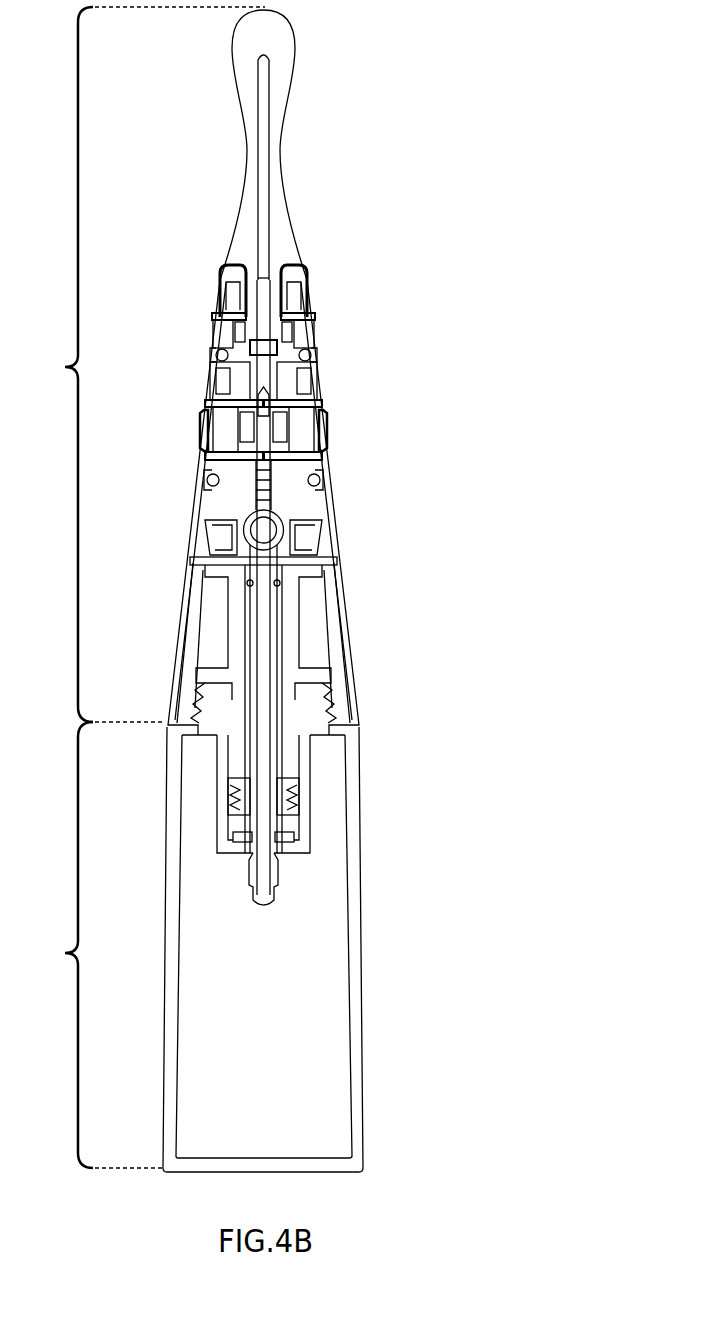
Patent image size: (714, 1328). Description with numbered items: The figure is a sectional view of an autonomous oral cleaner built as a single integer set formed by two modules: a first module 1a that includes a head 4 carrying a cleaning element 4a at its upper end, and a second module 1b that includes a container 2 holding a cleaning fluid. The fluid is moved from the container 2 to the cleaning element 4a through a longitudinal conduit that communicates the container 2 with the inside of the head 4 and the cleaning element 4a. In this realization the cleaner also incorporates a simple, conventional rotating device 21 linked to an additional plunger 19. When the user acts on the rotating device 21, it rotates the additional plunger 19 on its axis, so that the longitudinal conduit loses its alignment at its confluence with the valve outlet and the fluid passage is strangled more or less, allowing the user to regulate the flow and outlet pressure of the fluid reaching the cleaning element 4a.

The first module 1a is at (149, 364).
The second module 1b is at (99, 945).
The container 2 is at (288, 1032).
The head 4 is at (362, 700).
The cleaning element 4a is at (292, 89).
The additional plunger 19 is at (264, 408).
The rotating device 21 is at (334, 425).